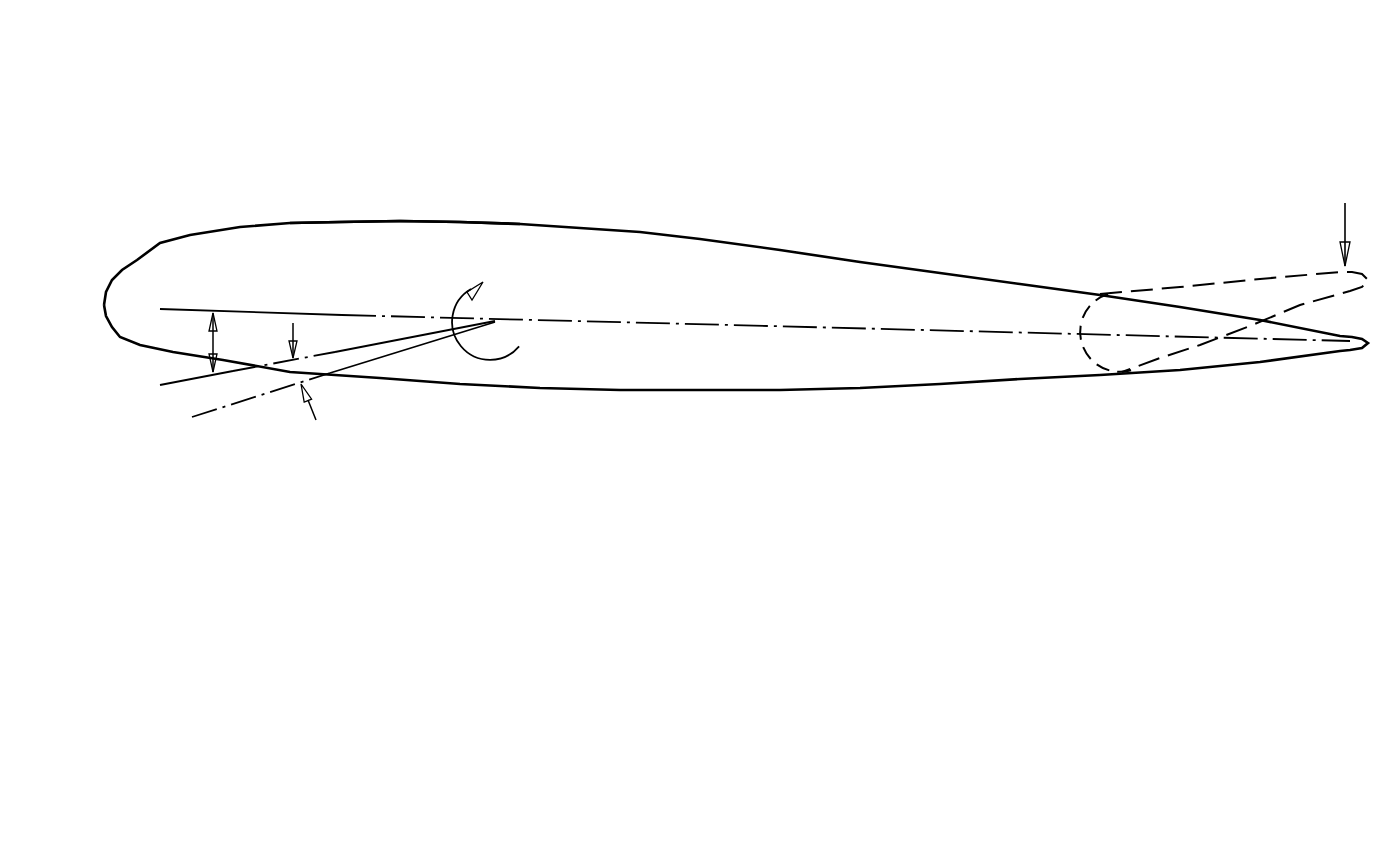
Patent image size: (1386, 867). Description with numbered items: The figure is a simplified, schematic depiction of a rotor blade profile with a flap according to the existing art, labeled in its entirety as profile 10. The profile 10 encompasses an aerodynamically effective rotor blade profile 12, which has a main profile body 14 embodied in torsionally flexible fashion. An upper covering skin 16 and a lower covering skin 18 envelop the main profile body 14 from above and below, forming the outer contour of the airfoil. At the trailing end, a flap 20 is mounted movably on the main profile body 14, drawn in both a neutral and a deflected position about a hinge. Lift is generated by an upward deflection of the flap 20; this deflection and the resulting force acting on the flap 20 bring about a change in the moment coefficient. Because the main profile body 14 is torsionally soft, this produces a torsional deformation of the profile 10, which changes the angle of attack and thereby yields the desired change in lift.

The profile 10 is at (168, 72).
The aerodynamically effective rotor blade profile 12 is at (342, 221).
The main profile body 14 is at (458, 222).
The upper covering skin 16 is at (633, 231).
The lower covering skin 18 is at (650, 392).
The flap 20 is at (1270, 273).